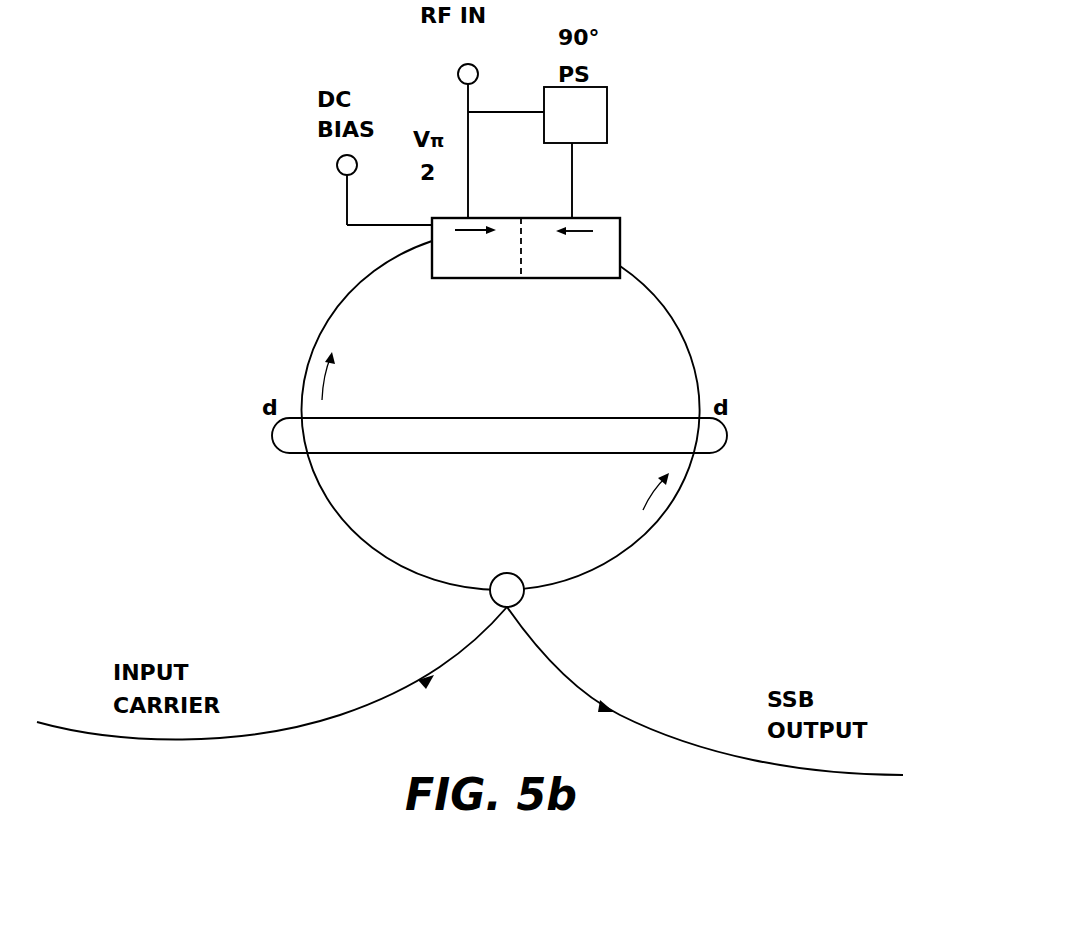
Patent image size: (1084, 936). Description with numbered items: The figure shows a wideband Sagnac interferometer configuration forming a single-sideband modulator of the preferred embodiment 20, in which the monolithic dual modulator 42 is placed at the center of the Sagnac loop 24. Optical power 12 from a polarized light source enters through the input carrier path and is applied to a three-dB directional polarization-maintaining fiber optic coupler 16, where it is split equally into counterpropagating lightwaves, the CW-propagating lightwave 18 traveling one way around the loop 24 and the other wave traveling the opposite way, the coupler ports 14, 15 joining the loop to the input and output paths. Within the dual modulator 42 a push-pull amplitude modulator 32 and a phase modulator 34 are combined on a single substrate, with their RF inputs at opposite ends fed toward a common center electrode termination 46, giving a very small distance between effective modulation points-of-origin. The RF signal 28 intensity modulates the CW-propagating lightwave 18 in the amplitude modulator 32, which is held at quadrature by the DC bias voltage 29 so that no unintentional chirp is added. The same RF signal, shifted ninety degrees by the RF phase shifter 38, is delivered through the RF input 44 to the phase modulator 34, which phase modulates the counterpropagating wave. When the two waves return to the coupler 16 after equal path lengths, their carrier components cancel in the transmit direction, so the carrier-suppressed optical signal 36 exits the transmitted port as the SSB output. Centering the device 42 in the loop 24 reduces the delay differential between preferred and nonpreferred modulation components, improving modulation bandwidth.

The optical power 12 is at (458, 660).
The coupler input port 14 is at (500, 605).
The coupler output port 15 is at (513, 607).
The 3-dB directional polarization-maintaining fiber optic coupler 16 is at (514, 573).
The CW-propagating lightwave 18 is at (318, 368).
The preferred embodiment 20 is at (672, 500).
The Sagnac loop 24 is at (276, 447).
The RF signal 28 is at (468, 100).
The DC bias voltage 29 is at (347, 196).
The amplitude modulator 32 is at (478, 279).
The phase modulator 34 is at (555, 279).
The optical signal / transmitted port 36 is at (563, 677).
The 90° RF phase shifter 38 is at (607, 106).
The monolithic dual modulator 42 is at (620, 222).
The RF input 44 is at (572, 188).
The common center electrode termination 46 is at (521, 218).